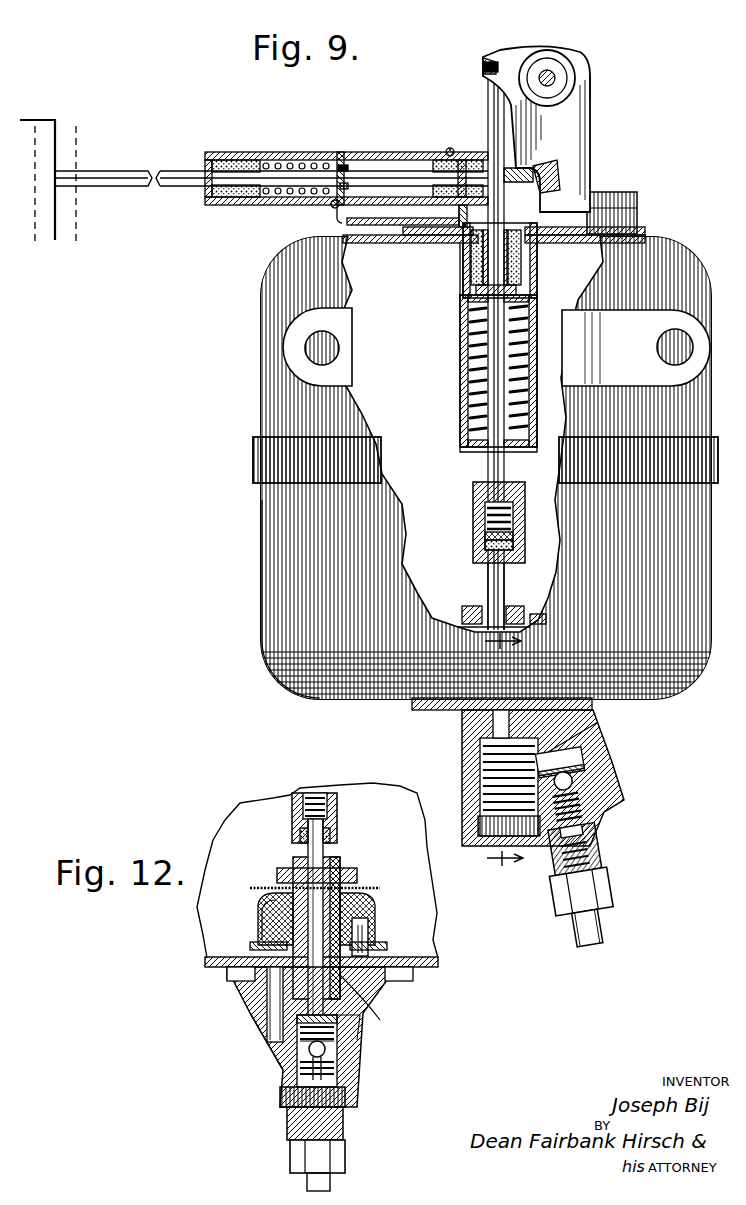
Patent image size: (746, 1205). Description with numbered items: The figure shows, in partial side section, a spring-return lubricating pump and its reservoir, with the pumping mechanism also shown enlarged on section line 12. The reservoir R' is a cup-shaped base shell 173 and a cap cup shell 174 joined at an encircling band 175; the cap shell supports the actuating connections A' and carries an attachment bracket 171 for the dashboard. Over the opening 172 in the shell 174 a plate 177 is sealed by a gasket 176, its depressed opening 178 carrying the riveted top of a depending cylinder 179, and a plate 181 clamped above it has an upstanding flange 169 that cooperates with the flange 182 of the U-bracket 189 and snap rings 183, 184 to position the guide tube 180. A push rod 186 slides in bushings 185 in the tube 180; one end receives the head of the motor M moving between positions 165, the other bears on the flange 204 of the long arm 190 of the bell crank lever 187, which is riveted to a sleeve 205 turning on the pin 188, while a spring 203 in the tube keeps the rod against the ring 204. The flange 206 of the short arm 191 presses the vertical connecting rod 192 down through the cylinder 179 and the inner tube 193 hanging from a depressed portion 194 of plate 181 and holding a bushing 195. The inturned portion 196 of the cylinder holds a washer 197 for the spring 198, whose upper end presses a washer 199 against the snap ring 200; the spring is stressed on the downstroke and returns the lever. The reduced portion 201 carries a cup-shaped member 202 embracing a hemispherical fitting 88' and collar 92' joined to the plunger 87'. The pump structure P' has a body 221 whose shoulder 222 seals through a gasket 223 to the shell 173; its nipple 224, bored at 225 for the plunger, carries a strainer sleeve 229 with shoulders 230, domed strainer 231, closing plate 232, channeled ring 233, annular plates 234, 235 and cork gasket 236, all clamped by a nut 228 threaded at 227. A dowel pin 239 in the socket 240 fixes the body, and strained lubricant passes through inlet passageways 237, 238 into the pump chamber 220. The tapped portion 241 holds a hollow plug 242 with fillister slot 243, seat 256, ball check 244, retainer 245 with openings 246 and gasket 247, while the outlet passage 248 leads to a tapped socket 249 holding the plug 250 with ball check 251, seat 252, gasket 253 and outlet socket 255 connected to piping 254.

In FIG. 9, the motor wall M is at (54, 121).
In FIG. 9, the push rod 186 is at (132, 170).
In FIG. 9, the motor head movement positions 165 is at (57, 230).
In FIG. 9, the bushings 185 is at (233, 162).
In FIG. 9, the stressed spring 203 is at (288, 160).
In FIG. 9, the snap ring 183 is at (338, 152).
In FIG. 9, the flange 204 is at (360, 165).
In FIG. 9, the guide tube 180 is at (410, 153).
In FIG. 9, the upstanding flange 182 is at (450, 148).
In FIG. 9, the snap ring 184 is at (462, 160).
In FIG. 9, the short arm 191 is at (497, 60).
In FIG. 9, the flange 206 is at (483, 66).
In FIG. 9, the pin 188 is at (548, 70).
In FIG. 9, the bell crank lever 187 is at (589, 74).
In FIG. 9, the actuating connections A' is at (612, 92).
In FIG. 9, the long arm 190 is at (556, 176).
In FIG. 9, the U-bracket 189 is at (562, 182).
In FIG. 9, the sleeve 205 is at (331, 206).
In FIG. 9, the upstanding flange 169 is at (340, 220).
In FIG. 9, the plate 181 is at (370, 243).
In FIG. 9, the gasket 176 is at (410, 236).
In FIG. 9, the plate 177 is at (447, 243).
In FIG. 9, the opening 172 is at (440, 243).
In FIG. 9, the depressed opening 178 is at (545, 238).
In FIG. 9, the depressed portion 194 is at (536, 255).
In FIG. 9, the bearing bushing 195 is at (537, 272).
In FIG. 9, the cap cup shell 174 is at (262, 300).
In FIG. 9, the inner tube 193 is at (464, 290).
In FIG. 9, the washer 199 is at (472, 298).
In FIG. 9, the depending cylinder 179 is at (461, 336).
In FIG. 9, the snap ring 200 is at (466, 355).
In FIG. 9, the attachment bracket 171 is at (660, 320).
In FIG. 9, the spring 198 is at (476, 397).
In FIG. 9, the vertical connecting rod 192 is at (492, 398).
In FIG. 9, the washer 197 is at (466, 446).
In FIG. 9, the inturned portion 196 is at (470, 452).
In FIG. 9, the reservoir R' is at (222, 460).
In FIG. 9, the band 175 is at (254, 486).
In FIG. 9, the lower reduced portion 201 is at (482, 496).
In FIG. 9, the cup-shaped member 202 is at (483, 516).
In FIG. 9, the hemispherical fitting 88' is at (465, 538).
In FIG. 9, the collar 92' is at (468, 554).
In FIG. 9, the base shell 173 is at (262, 547).
In FIG. 9, the pump plunger 87' is at (467, 596).
In FIG. 12, the pump plunger 87' is at (281, 912).
In FIG. 9, the nipple 224 is at (522, 606).
In FIG. 12, the nipple 224 is at (342, 857).
In FIG. 9, the nut 228 is at (535, 615).
In FIG. 12, the nut 228 is at (356, 884).
In FIG. 9, the pump structure P' is at (459, 634).
In FIG. 9, the section line 12 is at (504, 760).
In FIG. 9, the pump chamber 220 is at (478, 733).
In FIG. 12, the pump chamber 220 is at (356, 1018).
In FIG. 9, the threaded hollow plug 242 is at (480, 766).
In FIG. 12, the threaded hollow plug 242 is at (290, 1122).
In FIG. 9, the outlet passage 248 is at (598, 728).
In FIG. 9, the gasket 253 is at (586, 755).
In FIG. 9, the seat 252 is at (610, 767).
In FIG. 9, the ball check 251 is at (575, 784).
In FIG. 9, the tapped socket 249 is at (605, 808).
In FIG. 9, the tapped outlet socket 255 is at (610, 858).
In FIG. 9, the hollow threaded plug 250 is at (552, 868).
In FIG. 9, the piping 254 is at (614, 897).
In FIG. 12, the bore 225 is at (297, 852).
In FIG. 12, the upper annular plate 234 is at (280, 885).
In FIG. 12, the lower annular plate 235 is at (260, 889).
In FIG. 12, the shoulders 230 is at (262, 905).
In FIG. 12, the domed strainer 231 is at (258, 923).
In FIG. 12, the closing plate 232 is at (252, 946).
In FIG. 12, the threaded portion 227 is at (346, 870).
In FIG. 12, the sleeve 229 is at (376, 902).
In FIG. 12, the dowel pin 239 is at (369, 942).
In FIG. 12, the channeled ring 233 is at (387, 950).
In FIG. 12, the cork gasket 236 is at (417, 963).
In FIG. 12, the gasket 223 is at (242, 980).
In FIG. 12, the inlet passageway 237 is at (273, 1000).
In FIG. 12, the pump body 221 is at (250, 1020).
In FIG. 12, the gasket 247 is at (297, 1020).
In FIG. 12, the spring support and ball check retainer 245 is at (296, 1040).
In FIG. 12, the inlet passageway 238 is at (282, 1060).
In FIG. 12, the tapped socket 241 is at (283, 1092).
In FIG. 12, the shoulder 222 is at (393, 980).
In FIG. 12, the socket 240 is at (366, 1000).
In FIG. 12, the openings 246 is at (340, 1040).
In FIG. 12, the ball check 244 is at (326, 1052).
In FIG. 12, the seat 256 is at (323, 1060).
In FIG. 12, the fillister slot 243 is at (343, 1122).